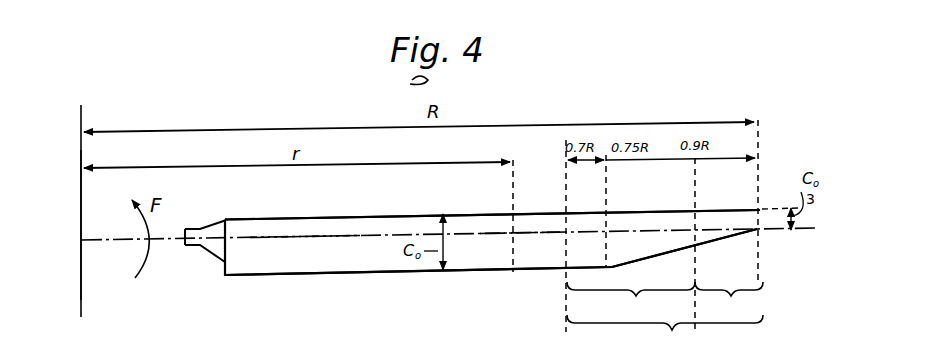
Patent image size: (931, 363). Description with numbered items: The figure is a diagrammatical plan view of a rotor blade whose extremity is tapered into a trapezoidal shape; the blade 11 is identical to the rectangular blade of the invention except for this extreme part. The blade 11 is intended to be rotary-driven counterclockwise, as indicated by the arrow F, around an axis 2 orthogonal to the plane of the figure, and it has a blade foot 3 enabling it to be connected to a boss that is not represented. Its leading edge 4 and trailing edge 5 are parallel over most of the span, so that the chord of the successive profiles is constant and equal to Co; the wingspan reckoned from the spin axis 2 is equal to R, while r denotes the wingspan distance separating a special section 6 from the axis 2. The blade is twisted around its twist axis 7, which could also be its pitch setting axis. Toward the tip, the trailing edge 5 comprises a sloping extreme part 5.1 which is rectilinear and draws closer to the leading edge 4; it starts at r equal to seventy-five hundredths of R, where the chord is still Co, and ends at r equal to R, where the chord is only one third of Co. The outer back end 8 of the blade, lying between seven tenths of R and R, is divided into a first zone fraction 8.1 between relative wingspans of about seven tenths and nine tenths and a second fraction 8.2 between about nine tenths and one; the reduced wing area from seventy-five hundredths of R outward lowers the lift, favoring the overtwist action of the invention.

The axis 2 is at (80, 240).
The blade foot 3 is at (215, 248).
The leading edge 4 is at (346, 218).
The trailing edge 5 is at (387, 274).
The sloping extreme part 5.1 is at (712, 243).
The section 6 is at (513, 248).
The twist axis 7 is at (316, 240).
The outer back end 8 is at (674, 332).
The first zone fraction 8.1 is at (638, 297).
The second fraction of the zone 8.2 is at (740, 294).
The rotor blade 11 is at (468, 281).